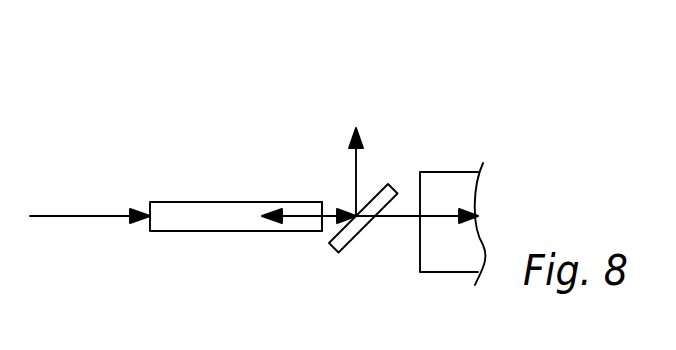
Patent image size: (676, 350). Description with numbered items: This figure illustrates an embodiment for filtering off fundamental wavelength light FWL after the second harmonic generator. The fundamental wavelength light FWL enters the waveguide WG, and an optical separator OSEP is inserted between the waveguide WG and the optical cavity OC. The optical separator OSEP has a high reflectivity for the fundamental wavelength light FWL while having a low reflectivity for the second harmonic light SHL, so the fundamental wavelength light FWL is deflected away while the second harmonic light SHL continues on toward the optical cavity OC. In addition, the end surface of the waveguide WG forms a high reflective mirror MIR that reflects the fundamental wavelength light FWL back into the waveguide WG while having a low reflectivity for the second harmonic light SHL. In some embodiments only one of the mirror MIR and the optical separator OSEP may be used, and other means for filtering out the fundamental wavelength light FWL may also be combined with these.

The fundamental wavelength light FWL is at (68, 216).
The waveguide WG is at (229, 202).
The mirror MIR is at (323, 203).
The optical separator OSEP is at (388, 184).
The second harmonic light SHL is at (410, 220).
The optical cavity OC is at (452, 172).